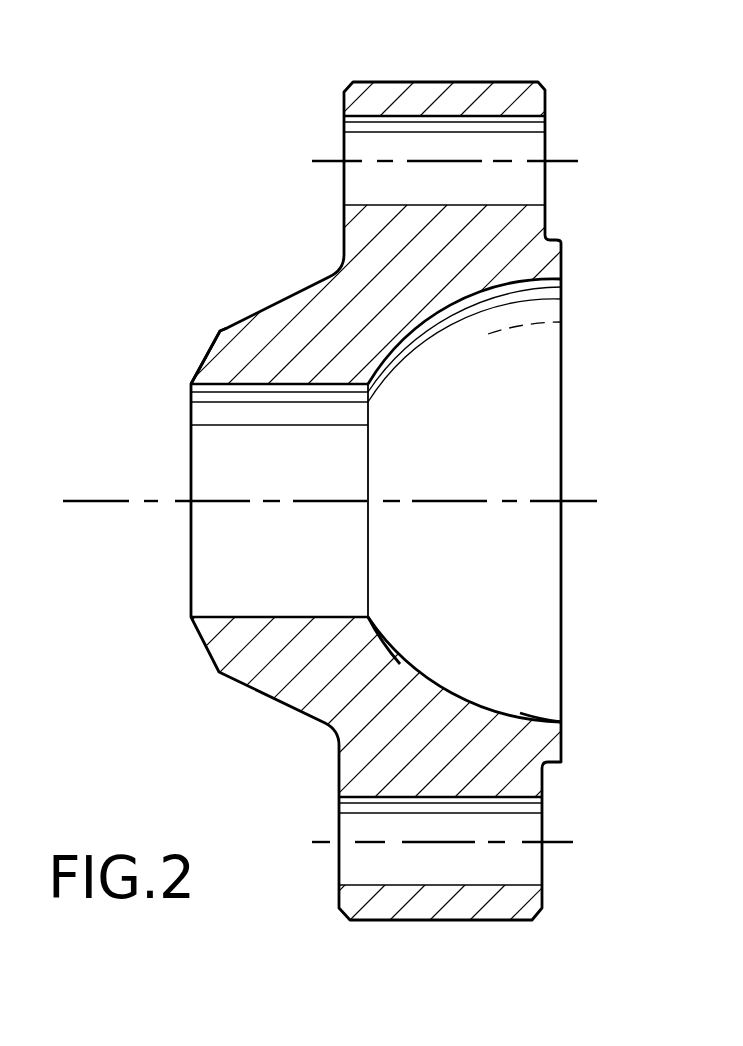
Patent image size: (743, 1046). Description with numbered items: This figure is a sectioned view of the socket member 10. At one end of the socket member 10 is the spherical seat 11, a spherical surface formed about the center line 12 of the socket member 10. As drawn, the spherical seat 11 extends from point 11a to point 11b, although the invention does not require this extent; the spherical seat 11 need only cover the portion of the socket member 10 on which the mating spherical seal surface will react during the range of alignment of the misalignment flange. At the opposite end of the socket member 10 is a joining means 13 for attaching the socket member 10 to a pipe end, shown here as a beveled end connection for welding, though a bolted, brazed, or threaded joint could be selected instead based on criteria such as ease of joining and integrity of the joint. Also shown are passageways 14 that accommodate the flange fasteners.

The socket member 10 is at (273, 305).
The spherical seat 11 is at (455, 692).
The point 11a is at (370, 617).
The point 11b is at (561, 719).
The center line 12 is at (114, 502).
The joining means 13 is at (207, 353).
The passageways 14 is at (375, 150).